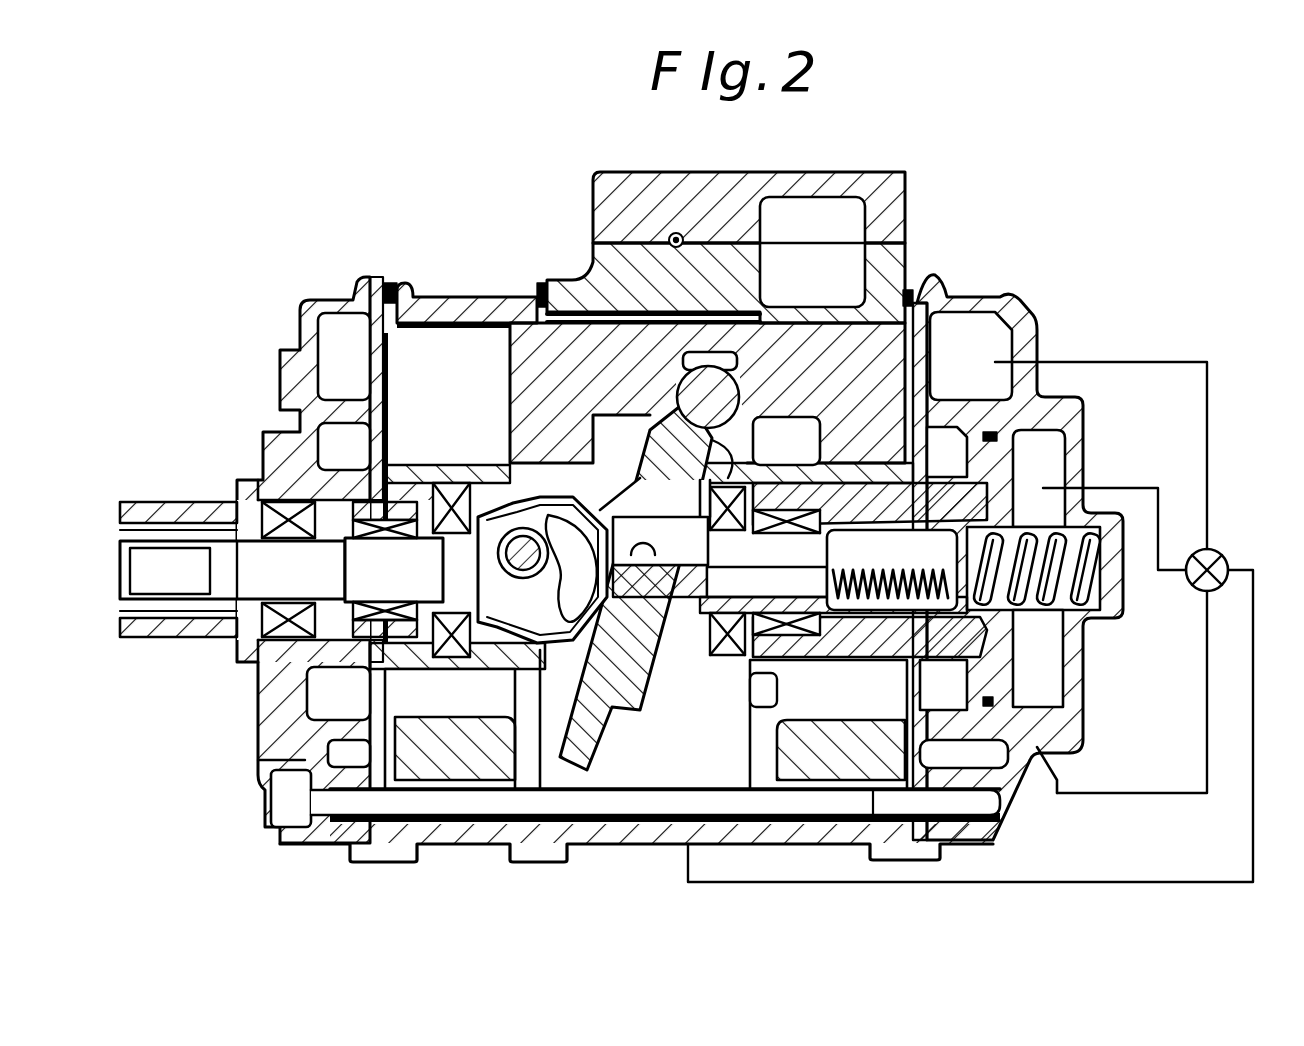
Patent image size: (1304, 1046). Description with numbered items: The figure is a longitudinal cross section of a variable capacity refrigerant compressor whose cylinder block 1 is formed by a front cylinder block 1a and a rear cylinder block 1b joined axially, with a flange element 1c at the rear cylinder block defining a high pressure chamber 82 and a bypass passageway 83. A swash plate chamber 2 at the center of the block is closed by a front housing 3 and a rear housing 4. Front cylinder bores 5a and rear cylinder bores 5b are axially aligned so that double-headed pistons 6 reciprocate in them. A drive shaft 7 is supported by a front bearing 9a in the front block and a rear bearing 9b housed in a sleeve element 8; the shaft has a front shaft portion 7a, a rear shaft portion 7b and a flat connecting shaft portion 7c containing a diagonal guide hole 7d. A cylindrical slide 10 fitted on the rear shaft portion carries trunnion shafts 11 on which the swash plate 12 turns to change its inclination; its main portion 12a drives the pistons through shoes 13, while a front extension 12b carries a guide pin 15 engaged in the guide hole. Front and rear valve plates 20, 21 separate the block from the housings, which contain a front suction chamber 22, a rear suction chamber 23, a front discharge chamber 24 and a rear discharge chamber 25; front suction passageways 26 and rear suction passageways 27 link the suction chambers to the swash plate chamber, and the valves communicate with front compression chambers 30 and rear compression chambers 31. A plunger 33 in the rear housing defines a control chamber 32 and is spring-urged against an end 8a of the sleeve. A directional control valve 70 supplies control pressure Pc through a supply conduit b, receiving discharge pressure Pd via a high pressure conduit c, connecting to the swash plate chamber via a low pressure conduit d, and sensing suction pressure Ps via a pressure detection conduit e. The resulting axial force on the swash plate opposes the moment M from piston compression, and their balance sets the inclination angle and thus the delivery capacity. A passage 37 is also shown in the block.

The cylinder block 1 is at (651, 230).
The front cylinder block 1a is at (497, 297).
The rear cylinder block 1b is at (573, 277).
The flange element 1c is at (748, 188).
The swash plate chamber 2 is at (696, 757).
The front housing 3 is at (308, 303).
The rear housing 4 is at (1022, 316).
The front cylinder bores 5a is at (450, 318).
The rear cylinder bores 5b is at (815, 319).
The double-headed pistons 6 is at (510, 380).
The drive shaft 7 is at (175, 586).
The front shaft portion 7a is at (240, 527).
The rear shaft portion 7b is at (705, 617).
The connecting shaft portion 7c is at (490, 656).
The guide hole 7d is at (520, 648).
The sleeve element 8 is at (750, 648).
The end of the sleeve 8a is at (1010, 628).
The front bearing 9a is at (386, 540).
The rear bearing 9b is at (784, 531).
The cylindrical slide 10 is at (674, 616).
The trunnion shafts 11 is at (640, 553).
The swash plate 12 is at (622, 712).
The main portion 12a is at (586, 796).
The front extension 12b is at (618, 472).
The shoes 13 is at (740, 392).
The guide pin 15 is at (498, 562).
The front valve plate 20 is at (384, 284).
The rear valve plate 21 is at (923, 281).
The front suction chamber 22 is at (323, 460).
The rear suction chamber 23 is at (962, 465).
The front discharge chamber 24 is at (323, 368).
The rear discharge chamber 25 is at (945, 365).
The front suction passageways 26 is at (393, 705).
The rear suction passageways 27 is at (821, 705).
The front compression chambers 30 is at (413, 443).
The rear compression chambers 31 is at (952, 301).
The control chamber 32 is at (1020, 468).
The plunger 33 is at (1008, 668).
The passage 37 is at (676, 232).
The directional control valve 70 is at (1218, 554).
The high pressure chamber 82 is at (796, 235).
The bypass passageway 83 is at (702, 180).
The moment M is at (600, 757).
The supply conduit b is at (1150, 483).
The high pressure conduit c is at (1158, 361).
The low pressure conduit d is at (1253, 678).
The pressure detection conduit e is at (1200, 670).
The discharge pressure Pd is at (1069, 348).
The control pressure Pc is at (1106, 468).
The suction pressure Ps is at (1232, 770).